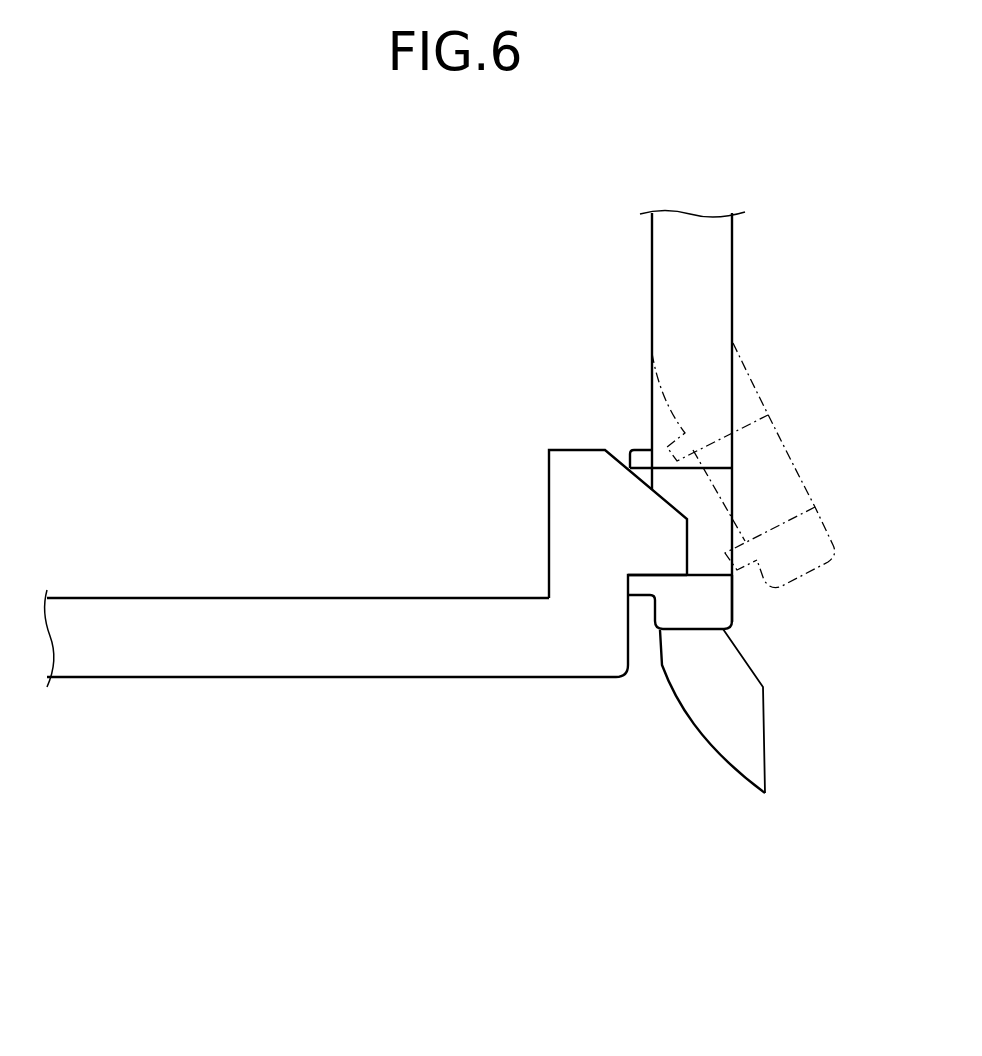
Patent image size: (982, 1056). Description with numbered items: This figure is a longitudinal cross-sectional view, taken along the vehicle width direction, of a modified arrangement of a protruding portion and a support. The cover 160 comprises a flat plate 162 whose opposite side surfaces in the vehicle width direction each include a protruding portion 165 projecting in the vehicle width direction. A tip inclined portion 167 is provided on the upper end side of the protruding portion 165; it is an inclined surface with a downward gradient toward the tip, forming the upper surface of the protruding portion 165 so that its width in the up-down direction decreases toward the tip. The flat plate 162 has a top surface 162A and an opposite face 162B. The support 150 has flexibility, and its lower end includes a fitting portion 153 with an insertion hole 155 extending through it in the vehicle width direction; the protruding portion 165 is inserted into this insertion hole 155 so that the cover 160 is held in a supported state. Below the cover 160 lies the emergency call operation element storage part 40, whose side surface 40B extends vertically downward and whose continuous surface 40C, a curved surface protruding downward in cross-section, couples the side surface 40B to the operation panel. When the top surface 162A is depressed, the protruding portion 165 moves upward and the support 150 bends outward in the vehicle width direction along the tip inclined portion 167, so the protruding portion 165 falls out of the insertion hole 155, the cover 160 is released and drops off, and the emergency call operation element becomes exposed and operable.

The emergency call operation element storage part 40 is at (687, 773).
The side surface 40B is at (660, 654).
The continuous surface 40C is at (707, 751).
The support 150 is at (704, 429).
The fitting portion 153 is at (747, 604).
The insertion hole 155 is at (737, 489).
The cover 160 is at (366, 592).
The flat plate 162 is at (366, 566).
The top surface of the flat plate 162A is at (418, 679).
The upper surface of arm 162B is at (295, 597).
The protruding portion 165 is at (540, 440).
The tip inclined portion 167 is at (622, 456).